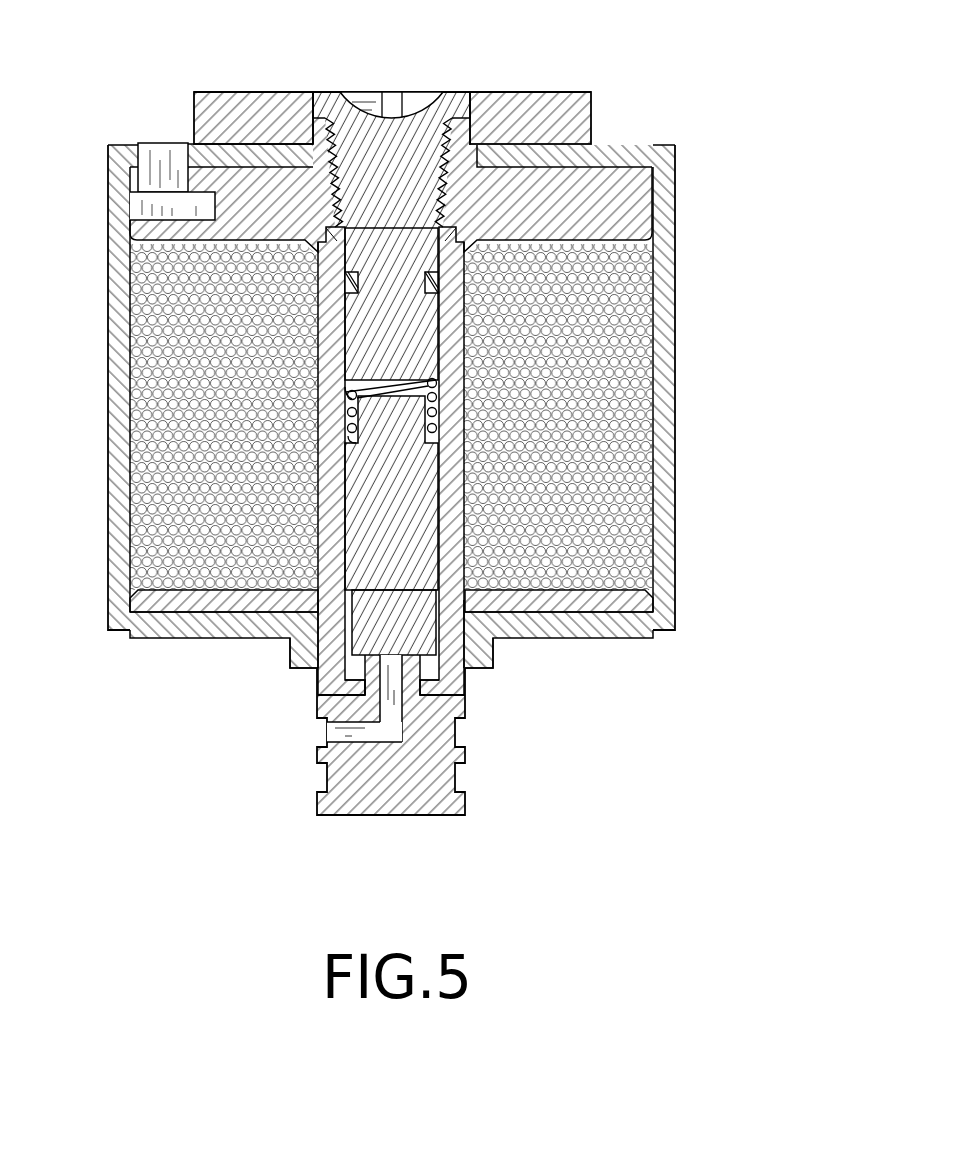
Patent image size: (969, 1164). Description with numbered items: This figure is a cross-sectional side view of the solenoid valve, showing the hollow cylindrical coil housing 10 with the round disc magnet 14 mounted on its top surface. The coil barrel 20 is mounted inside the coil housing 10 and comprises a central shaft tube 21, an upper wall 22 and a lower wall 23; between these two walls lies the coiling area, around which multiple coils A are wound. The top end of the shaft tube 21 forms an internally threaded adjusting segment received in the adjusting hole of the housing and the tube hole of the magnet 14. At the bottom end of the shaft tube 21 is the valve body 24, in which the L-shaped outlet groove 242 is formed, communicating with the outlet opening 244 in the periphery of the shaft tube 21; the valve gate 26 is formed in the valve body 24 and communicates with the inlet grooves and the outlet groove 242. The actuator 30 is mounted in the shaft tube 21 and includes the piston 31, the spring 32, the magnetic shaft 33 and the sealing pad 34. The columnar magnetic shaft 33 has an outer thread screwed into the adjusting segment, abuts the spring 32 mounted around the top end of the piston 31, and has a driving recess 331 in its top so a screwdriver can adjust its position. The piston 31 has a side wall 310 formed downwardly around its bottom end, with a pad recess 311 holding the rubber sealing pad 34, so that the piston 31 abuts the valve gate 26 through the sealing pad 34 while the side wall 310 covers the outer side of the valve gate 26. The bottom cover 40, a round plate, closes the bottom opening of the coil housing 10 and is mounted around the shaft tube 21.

The coil housing 10 is at (708, 366).
The magnet 14 is at (198, 96).
The coil barrel 20 is at (622, 168).
The shaft tube 21 is at (347, 478).
The upper wall 22 is at (650, 207).
The lower wall 23 is at (200, 600).
The valve body 24 is at (394, 737).
The valve gate 26 is at (410, 687).
The actuator 30 is at (392, 114).
The piston 31 is at (357, 499).
The spring 32 is at (352, 399).
The magnetic shaft 33 is at (328, 222).
The sealing pad 34 is at (410, 620).
The bottom cover 40 is at (598, 634).
The outlet groove 242 is at (372, 736).
The outlet opening 244 is at (332, 734).
The side wall 310 is at (345, 640).
The pad recess 311 is at (362, 674).
The driving recess 331 is at (393, 98).
The coils A is at (632, 510).